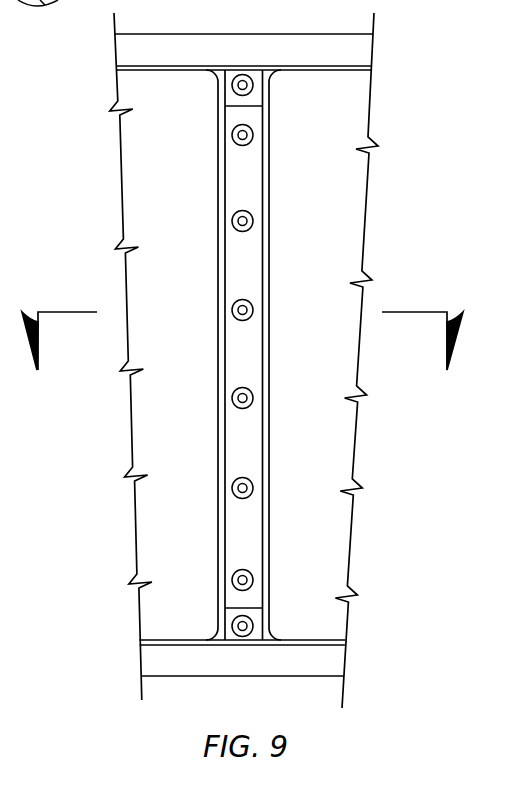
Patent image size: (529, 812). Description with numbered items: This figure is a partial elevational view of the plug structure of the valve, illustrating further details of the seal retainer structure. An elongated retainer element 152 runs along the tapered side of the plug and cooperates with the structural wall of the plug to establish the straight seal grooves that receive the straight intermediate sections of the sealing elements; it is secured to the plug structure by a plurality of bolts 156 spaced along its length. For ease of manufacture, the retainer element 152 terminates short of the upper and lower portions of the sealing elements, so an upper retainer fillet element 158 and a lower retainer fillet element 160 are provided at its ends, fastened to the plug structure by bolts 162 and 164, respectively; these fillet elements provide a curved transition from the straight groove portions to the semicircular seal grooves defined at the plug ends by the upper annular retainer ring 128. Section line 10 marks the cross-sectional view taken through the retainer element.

The section line 10- 10 is at (242, 356).
The upper annular retainer ring 128 is at (355, 53).
The retainer element 152 is at (255, 184).
The bolts 156 is at (247, 229).
The upper retainer fillet element 158 is at (233, 98).
The lower retainer fillet element 160 is at (228, 638).
The bolt 162 is at (243, 75).
The bolt 164 is at (243, 633).